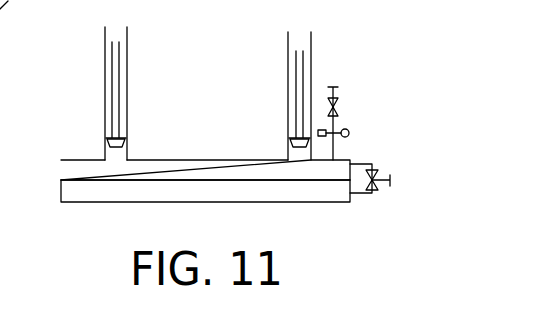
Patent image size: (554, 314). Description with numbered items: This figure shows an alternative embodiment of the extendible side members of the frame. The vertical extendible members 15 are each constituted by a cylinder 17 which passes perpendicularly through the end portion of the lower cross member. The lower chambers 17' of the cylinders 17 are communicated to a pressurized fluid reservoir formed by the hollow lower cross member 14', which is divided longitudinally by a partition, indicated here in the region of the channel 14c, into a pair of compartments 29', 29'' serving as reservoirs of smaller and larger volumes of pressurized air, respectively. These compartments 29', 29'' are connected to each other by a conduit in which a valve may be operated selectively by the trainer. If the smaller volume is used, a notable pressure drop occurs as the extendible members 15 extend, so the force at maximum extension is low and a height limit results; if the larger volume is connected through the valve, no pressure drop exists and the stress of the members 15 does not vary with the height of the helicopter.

The vertical extendible member 15 is at (204, 93).
The cylinder 17 is at (237, 93).
The lower chamber 17' is at (177, 141).
The hollow lower cross member 14' is at (178, 182).
The compartment 29' is at (178, 180).
The compartment 29'' is at (193, 207).
The base channel 14c is at (172, 181).